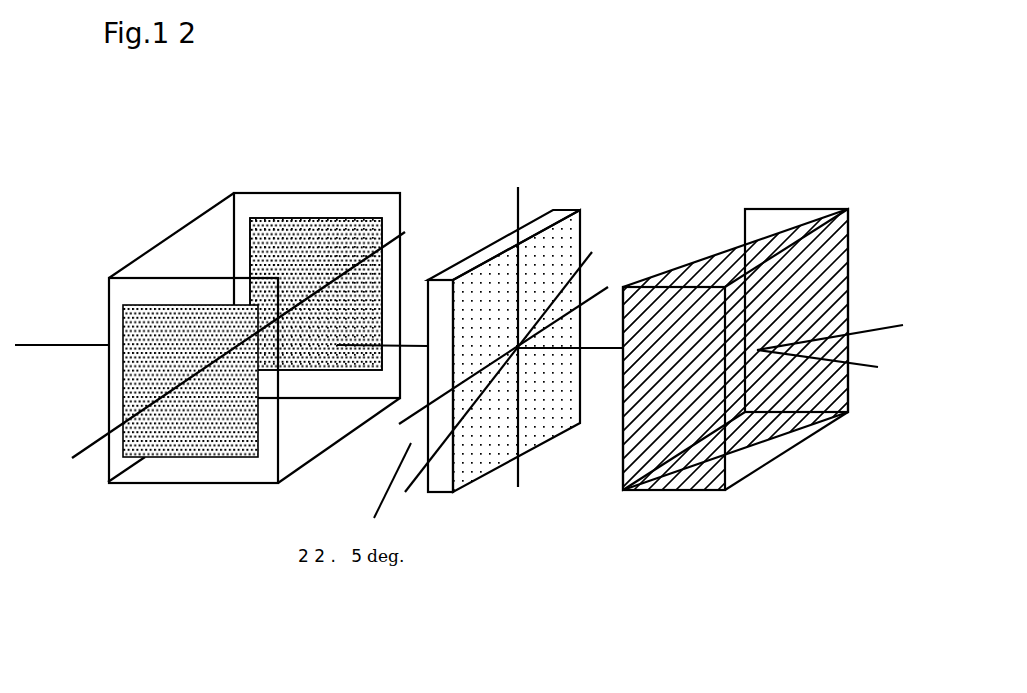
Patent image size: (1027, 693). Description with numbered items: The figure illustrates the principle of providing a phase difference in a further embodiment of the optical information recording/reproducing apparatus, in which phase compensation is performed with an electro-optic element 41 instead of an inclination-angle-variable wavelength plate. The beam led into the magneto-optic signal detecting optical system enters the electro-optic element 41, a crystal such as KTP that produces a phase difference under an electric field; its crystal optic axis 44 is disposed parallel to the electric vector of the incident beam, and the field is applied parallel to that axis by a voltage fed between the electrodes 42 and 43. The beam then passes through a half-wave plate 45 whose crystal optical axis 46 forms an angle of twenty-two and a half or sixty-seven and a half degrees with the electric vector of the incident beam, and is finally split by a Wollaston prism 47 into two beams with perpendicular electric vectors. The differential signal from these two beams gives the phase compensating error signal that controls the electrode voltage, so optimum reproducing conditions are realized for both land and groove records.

The electro-optic element 41 is at (254, 335).
The electrode 42 is at (330, 232).
The electrode 43 is at (200, 430).
The crystal optic axis 44 is at (100, 433).
The λ/2 plate 45 is at (557, 267).
The optic axis of half-wave plate 46 is at (468, 413).
The Wollaston prism 47 is at (695, 402).